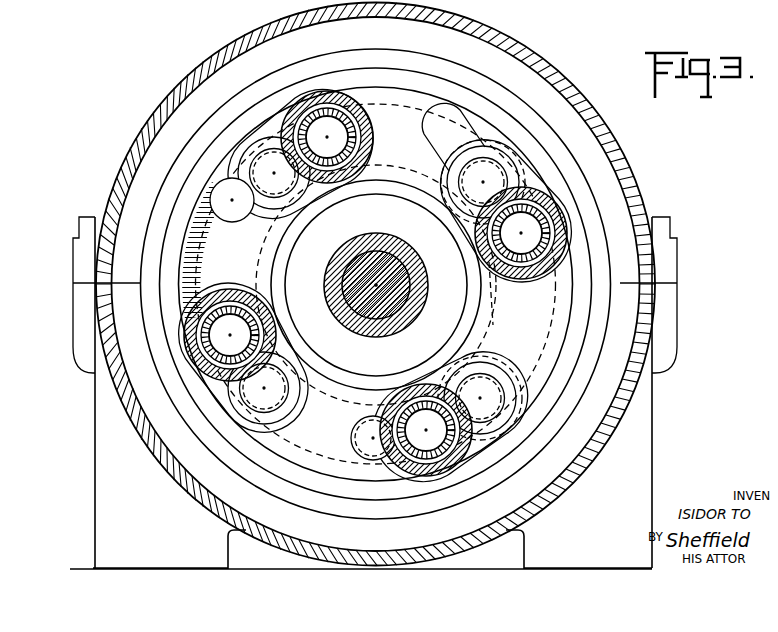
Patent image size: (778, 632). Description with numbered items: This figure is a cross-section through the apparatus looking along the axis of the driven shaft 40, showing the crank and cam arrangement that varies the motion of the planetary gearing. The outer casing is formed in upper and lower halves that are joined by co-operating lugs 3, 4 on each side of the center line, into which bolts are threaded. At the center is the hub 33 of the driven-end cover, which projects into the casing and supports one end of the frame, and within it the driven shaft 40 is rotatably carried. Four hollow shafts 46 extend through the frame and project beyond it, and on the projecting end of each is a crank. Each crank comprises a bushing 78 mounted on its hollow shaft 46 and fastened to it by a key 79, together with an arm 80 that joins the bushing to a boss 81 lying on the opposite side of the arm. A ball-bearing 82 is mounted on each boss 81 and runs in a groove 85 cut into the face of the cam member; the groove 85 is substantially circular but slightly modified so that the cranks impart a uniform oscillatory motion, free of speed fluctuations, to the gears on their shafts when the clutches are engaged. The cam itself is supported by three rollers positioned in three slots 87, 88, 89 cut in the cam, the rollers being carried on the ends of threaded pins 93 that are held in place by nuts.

The lug 3 is at (679, 263).
The lug 4 is at (679, 322).
The hub 33 is at (415, 222).
The driven shaft 40 is at (402, 283).
The hollow shaft 46 is at (345, 92).
The bushing 78 is at (560, 227).
The key 79 is at (560, 173).
The arm 80 is at (560, 140).
The boss 81 is at (262, 400).
The ball-bearing 82 is at (520, 388).
The groove 85 is at (405, 92).
The slot 87 is at (505, 365).
The slot 88 is at (242, 272).
The slot 89 is at (426, 136).
The pin 93 is at (332, 525).